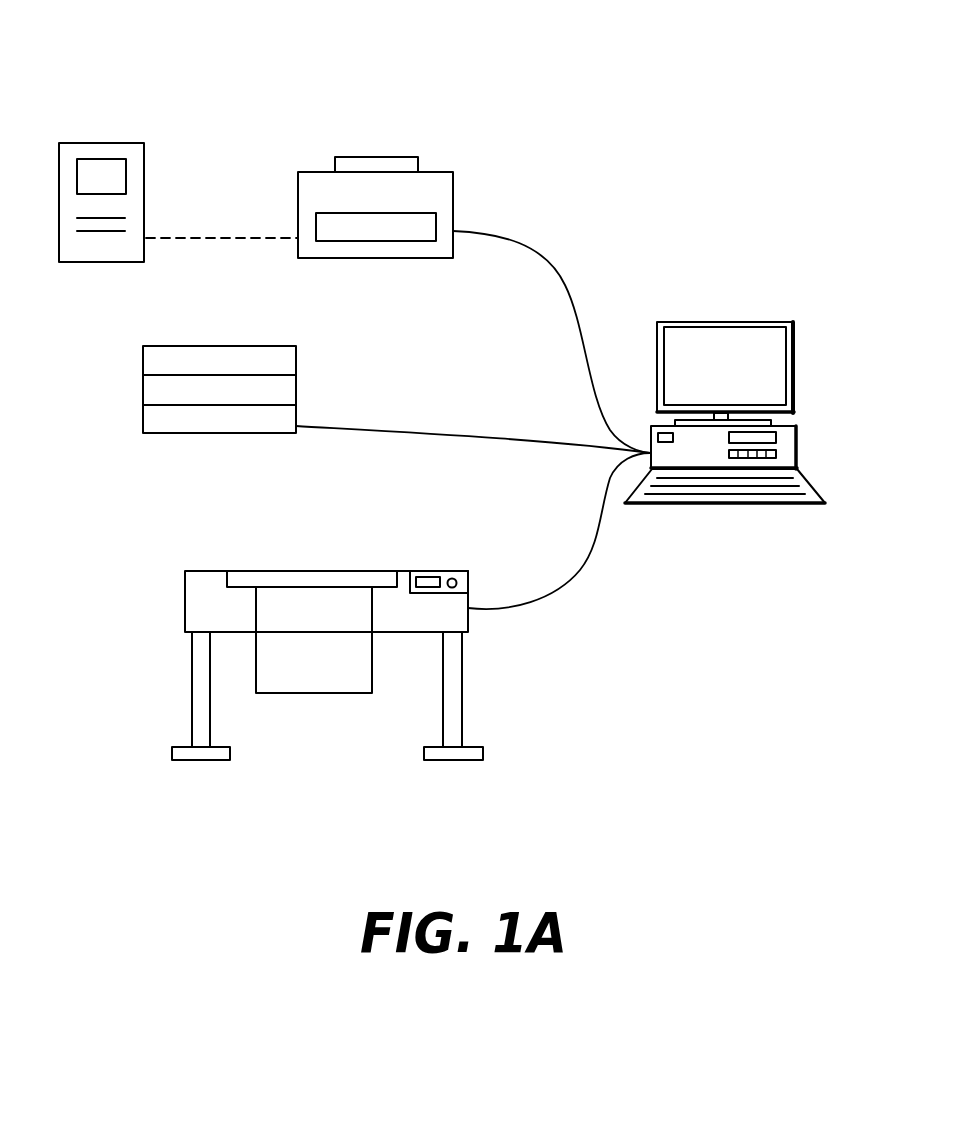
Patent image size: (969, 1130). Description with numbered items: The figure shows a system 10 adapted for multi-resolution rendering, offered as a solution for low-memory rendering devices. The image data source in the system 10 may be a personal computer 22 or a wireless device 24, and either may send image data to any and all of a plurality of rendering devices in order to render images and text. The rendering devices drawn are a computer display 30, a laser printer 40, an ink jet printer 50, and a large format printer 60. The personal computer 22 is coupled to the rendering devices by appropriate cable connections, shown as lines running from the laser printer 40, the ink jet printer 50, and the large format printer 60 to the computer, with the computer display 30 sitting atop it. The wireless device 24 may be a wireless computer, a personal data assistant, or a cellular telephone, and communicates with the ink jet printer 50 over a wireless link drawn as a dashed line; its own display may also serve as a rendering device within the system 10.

The system 10 is at (725, 169).
The personal computer 22 is at (796, 450).
The wireless device 24 is at (144, 177).
The computer display 30 is at (793, 364).
The laser printer 40 is at (296, 363).
The ink jet printer 50 is at (453, 197).
The large format printer 60 is at (462, 683).